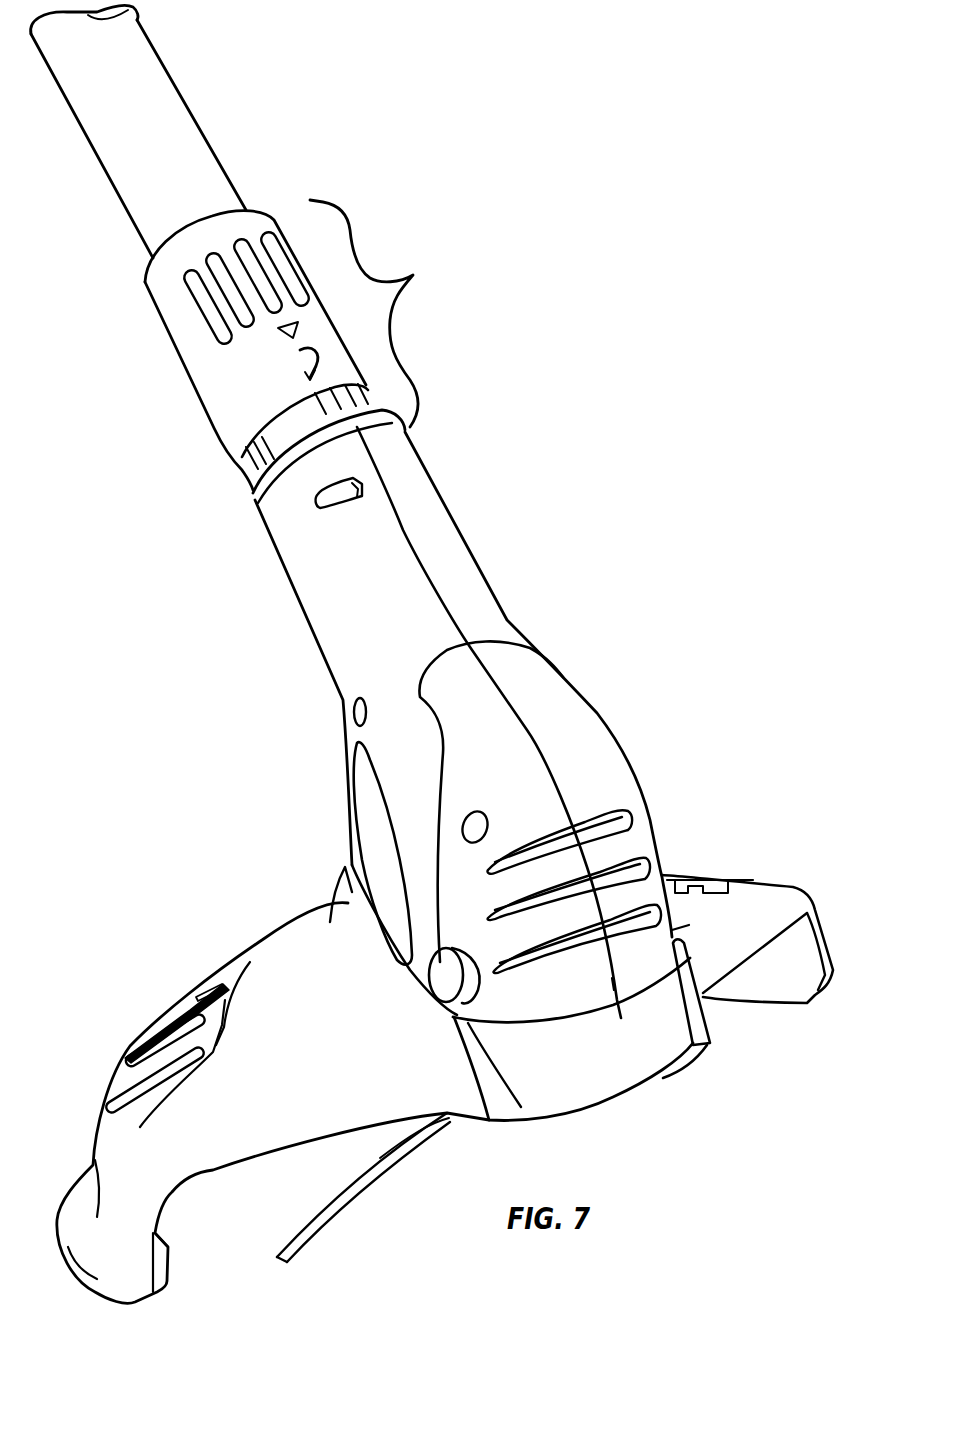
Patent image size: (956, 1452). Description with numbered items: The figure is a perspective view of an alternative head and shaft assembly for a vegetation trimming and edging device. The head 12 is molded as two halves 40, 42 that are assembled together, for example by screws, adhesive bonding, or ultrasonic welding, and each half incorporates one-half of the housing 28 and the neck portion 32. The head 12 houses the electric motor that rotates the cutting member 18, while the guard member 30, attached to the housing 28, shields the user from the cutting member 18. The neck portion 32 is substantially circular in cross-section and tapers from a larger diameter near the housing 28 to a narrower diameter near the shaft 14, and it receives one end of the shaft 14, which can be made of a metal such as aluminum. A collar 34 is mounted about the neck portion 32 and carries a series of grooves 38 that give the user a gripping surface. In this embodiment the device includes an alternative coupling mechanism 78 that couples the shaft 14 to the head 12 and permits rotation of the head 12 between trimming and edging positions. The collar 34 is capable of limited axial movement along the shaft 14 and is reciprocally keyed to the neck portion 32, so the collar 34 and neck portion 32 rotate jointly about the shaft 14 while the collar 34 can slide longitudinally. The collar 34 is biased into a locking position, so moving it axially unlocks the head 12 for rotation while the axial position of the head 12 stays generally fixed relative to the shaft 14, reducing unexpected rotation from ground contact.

The head 12 is at (636, 724).
The shaft 14 is at (161, 170).
The cutting member 18 is at (300, 1223).
The housing 28 is at (604, 783).
The guard member 30 is at (322, 1003).
The neck portion 32 is at (472, 543).
The collar 34 is at (283, 209).
The grooves 38 is at (217, 253).
The half of head 40 is at (361, 581).
The half of head 42 is at (427, 480).
The alternative coupling mechanism 78 is at (385, 313).